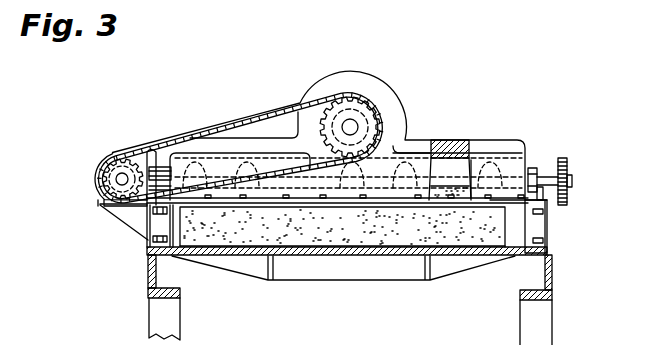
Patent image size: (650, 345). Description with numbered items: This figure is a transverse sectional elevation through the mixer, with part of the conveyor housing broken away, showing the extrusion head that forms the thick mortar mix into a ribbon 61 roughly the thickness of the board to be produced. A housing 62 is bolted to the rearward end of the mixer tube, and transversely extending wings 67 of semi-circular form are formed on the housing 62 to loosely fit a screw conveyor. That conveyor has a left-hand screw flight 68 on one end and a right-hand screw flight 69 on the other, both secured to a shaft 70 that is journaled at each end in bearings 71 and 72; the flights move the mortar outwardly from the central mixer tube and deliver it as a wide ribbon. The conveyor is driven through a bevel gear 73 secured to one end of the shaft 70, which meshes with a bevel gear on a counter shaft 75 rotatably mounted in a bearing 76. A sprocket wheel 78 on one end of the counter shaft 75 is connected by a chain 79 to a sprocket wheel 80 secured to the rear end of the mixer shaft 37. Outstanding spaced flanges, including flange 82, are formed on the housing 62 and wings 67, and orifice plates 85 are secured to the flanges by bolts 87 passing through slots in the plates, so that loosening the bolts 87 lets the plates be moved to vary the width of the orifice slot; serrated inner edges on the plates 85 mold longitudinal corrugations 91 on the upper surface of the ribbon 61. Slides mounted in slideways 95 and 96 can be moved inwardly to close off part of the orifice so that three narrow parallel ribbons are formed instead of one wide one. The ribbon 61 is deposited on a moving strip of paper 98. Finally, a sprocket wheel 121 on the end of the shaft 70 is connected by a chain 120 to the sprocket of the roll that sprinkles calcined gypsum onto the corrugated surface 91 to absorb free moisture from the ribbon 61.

The shaft 37 is at (357, 124).
The ribbon 61 is at (477, 233).
The housing 62 is at (400, 113).
The wings 67 is at (486, 160).
The left-hand screw flight 68 is at (436, 178).
The right-hand screw flight 69 is at (241, 158).
The shaft 70 is at (452, 182).
The bearing 71 is at (533, 172).
The bearing 72 is at (156, 170).
The bevel gear 73 is at (136, 160).
The counter shaft 75 is at (118, 181).
The bearing 76 is at (100, 162).
The sprocket wheel 78 is at (121, 196).
The chain 79 is at (287, 112).
The sprocket wheel 80 is at (356, 106).
The flange 82 is at (508, 205).
The orifice plate 85 is at (165, 213).
The bolt 87 is at (501, 198).
The corrugations 91 is at (352, 246).
The slideway 95 is at (415, 210).
The slideway 96 is at (286, 208).
The strip of paper 98 is at (510, 252).
The chain 120 is at (566, 159).
The sprocket wheel 121 is at (569, 197).